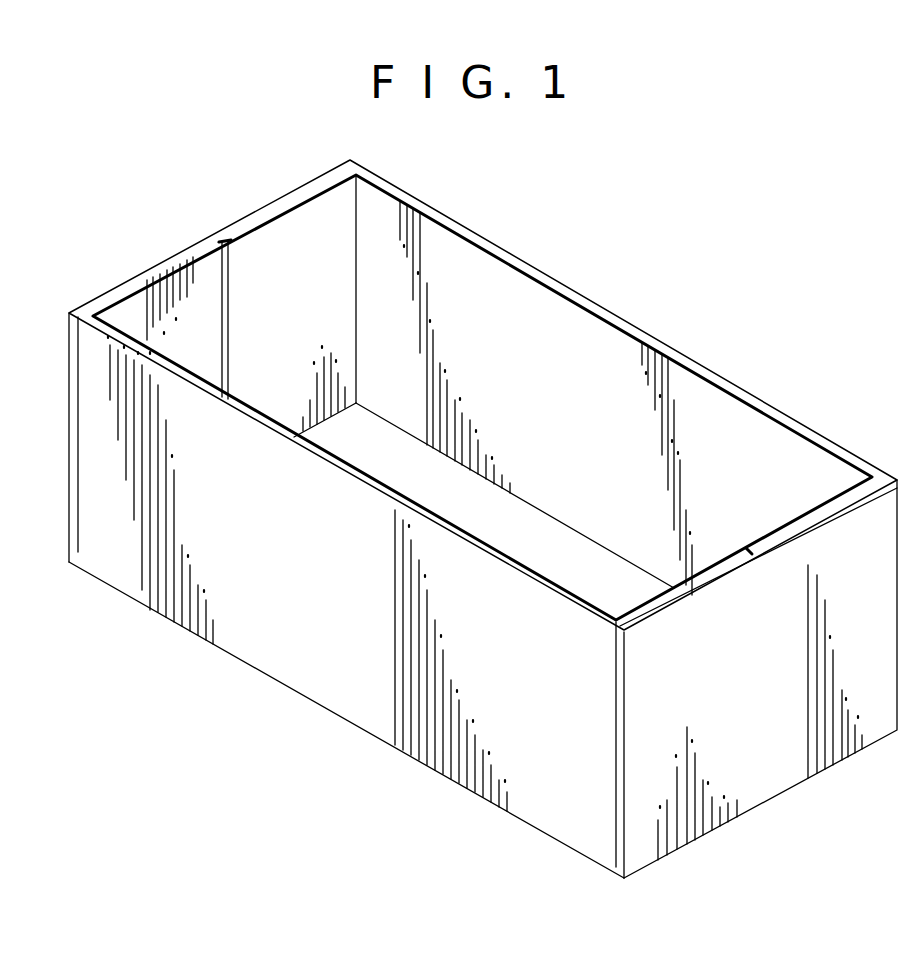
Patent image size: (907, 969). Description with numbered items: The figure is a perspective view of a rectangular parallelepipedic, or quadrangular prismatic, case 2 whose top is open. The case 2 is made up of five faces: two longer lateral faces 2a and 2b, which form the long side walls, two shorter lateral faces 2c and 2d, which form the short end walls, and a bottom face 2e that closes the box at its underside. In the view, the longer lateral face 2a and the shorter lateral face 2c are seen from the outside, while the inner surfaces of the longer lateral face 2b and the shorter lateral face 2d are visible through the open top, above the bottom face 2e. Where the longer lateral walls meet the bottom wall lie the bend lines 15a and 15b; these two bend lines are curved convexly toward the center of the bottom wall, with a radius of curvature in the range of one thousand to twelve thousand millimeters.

The rectangular parallelepipedic case 2 is at (676, 333).
The longer lateral face 2a is at (338, 610).
The longer lateral face 2b is at (570, 424).
The shorter lateral face 2c is at (762, 698).
The shorter lateral face 2d is at (306, 304).
The bottom face 2e is at (537, 548).
The bend line 15a is at (352, 726).
The bend line 15b is at (604, 548).